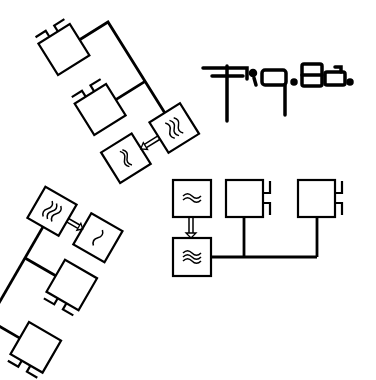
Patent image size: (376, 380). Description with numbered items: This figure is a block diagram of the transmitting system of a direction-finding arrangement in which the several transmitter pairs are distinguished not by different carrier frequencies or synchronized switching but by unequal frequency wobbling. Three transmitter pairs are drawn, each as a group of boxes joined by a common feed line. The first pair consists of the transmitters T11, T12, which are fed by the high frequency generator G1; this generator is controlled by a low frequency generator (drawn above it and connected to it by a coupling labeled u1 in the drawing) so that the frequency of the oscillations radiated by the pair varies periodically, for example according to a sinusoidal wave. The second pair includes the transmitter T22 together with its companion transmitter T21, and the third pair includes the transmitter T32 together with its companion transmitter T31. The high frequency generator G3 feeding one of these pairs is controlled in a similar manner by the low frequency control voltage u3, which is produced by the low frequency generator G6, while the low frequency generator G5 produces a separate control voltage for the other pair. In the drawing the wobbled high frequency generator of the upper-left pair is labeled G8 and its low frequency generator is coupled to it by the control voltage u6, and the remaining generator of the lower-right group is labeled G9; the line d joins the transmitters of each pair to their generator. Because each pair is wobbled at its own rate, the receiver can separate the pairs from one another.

The common bus / distribution line d is at (129, 53).
The transmitter T32 is at (45, 58).
The transformer T31 is at (82, 120).
The generator (three-phase) G8 is at (178, 128).
The low frequency generator G6 is at (110, 169).
The coupling / drive between G8 and G6 u6 is at (154, 149).
The high frequency generator G3 is at (37, 191).
The low frequency generator G5 is at (113, 250).
The low frequency control voltage u3 is at (76, 216).
The transformer T21 is at (83, 304).
The transmitter T22 is at (52, 361).
The generator (two-phase) G9 is at (192, 179).
The high frequency generator G1 is at (184, 277).
The coupling / drive between G9 and G1 u1 is at (183, 227).
The transmitter T11 is at (256, 163).
The transmitter T12 is at (330, 163).